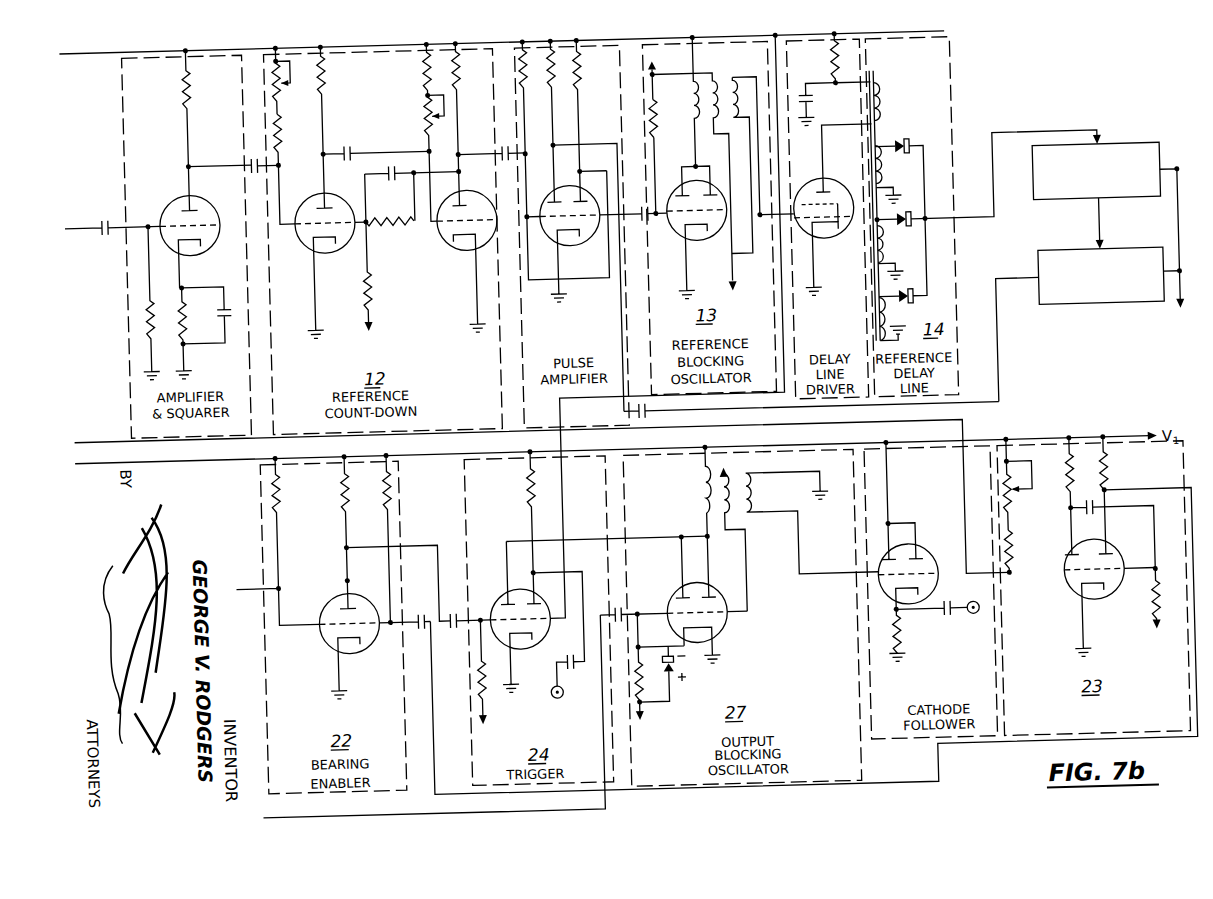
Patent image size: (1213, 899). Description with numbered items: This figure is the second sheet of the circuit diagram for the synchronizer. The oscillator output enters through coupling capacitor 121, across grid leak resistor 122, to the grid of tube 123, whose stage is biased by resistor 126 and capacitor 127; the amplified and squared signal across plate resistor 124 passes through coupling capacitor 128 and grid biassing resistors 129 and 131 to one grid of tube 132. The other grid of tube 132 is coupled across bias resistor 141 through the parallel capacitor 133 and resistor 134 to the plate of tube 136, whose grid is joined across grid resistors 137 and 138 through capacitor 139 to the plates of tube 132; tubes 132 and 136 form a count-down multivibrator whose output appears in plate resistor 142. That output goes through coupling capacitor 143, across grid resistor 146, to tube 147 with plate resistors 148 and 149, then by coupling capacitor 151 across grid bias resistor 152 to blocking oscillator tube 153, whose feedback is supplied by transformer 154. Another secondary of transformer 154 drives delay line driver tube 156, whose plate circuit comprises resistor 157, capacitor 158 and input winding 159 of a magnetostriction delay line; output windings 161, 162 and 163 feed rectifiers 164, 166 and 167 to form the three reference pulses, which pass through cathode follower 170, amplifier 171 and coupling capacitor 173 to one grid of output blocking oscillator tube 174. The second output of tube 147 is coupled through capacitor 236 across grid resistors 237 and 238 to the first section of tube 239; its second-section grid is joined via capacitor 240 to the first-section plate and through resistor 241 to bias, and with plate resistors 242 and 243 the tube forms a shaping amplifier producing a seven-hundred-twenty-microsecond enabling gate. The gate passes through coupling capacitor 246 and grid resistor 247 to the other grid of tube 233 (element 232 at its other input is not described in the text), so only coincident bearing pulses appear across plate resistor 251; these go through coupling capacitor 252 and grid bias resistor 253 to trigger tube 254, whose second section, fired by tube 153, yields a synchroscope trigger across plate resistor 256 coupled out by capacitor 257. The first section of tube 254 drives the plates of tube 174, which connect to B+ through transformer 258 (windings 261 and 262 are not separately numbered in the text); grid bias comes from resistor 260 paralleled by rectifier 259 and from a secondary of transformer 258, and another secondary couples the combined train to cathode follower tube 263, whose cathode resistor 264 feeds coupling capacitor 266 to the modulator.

The coupling capacitor 121 is at (107, 210).
The grid leak resistor 122 is at (152, 302).
The tube 123 is at (190, 196).
The plate resistor 124 is at (200, 77).
The resistor 126 is at (190, 313).
The capacitor 127 is at (227, 297).
The coupling capacitor 128 is at (260, 150).
The grid biassing resistor 129 is at (288, 135).
The grid biassing resistor 131 is at (288, 88).
The tube 132 is at (322, 246).
The capacitor 133 is at (398, 160).
The resistor 134 is at (410, 221).
The tube 136 is at (466, 245).
The grid resistor 137 is at (434, 47).
The grid resistor 138 is at (449, 111).
The capacitor 139 is at (355, 138).
The bias resistor 141 is at (376, 280).
The plate resistor 142 is at (469, 88).
The coupling capacitor 143 is at (510, 148).
The grid resistor 146 is at (528, 55).
The tube 147 is at (596, 246).
The plate resistor 148 is at (560, 55).
The plate resistor 149 is at (590, 82).
The coupling capacitor 151 is at (655, 222).
The grid bias resistor 152 is at (664, 118).
The tube 153 is at (721, 245).
The transformer 154 is at (726, 86).
The delay line driver tube 156 is at (840, 243).
The resistor 157 is at (842, 52).
The capacitor 158 is at (818, 108).
The input winding 159 is at (889, 110).
The output winding 161 is at (878, 164).
The output winding 162 is at (876, 240).
The output winding 163 is at (876, 313).
The rectifier 164 is at (906, 144).
The rectifier 166 is at (908, 217).
The rectifier 167 is at (909, 294).
The cathode follower 170 is at (1120, 155).
The amplifier 171 is at (1144, 260).
The coupling capacitor 173 is at (618, 608).
The output blocking oscillator tube 174 is at (724, 622).
The grid resistor 232 is at (282, 487).
The tube 233 is at (364, 645).
The capacitor 236 is at (632, 411).
The grid resistor 237 is at (1012, 572).
The grid resistor 238 is at (1012, 522).
The tube 239 is at (1112, 600).
The capacitor 240 is at (1094, 522).
The resistor 241 is at (1150, 630).
The plate resistor 242 is at (1074, 468).
The plate resistor 243 is at (1108, 480).
The coupling capacitor 246 is at (422, 608).
The grid resistor 247 is at (392, 487).
The plate resistor 251 is at (342, 500).
The coupling capacitor 252 is at (455, 608).
The grid bias resistor 253 is at (474, 680).
The trigger tube 254 is at (528, 647).
The plate resistor 256 is at (527, 497).
The coupling capacitor 257 is at (566, 662).
The transformer 258 is at (735, 509).
The rectifier 259 is at (670, 666).
The resistor 260 is at (637, 692).
The blocking oscillator transformer primary 261 is at (702, 518).
The transformer output winding 262 is at (755, 490).
The cathode follower tube 263 is at (921, 561).
The cathode resistor 264 is at (895, 630).
The coupling capacitor 266 is at (955, 602).